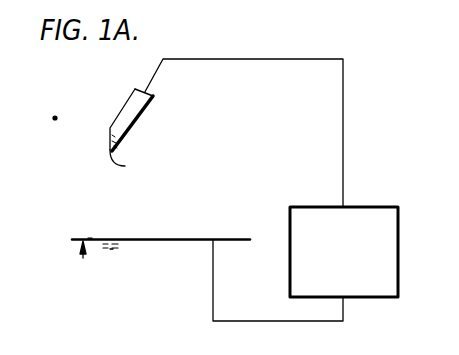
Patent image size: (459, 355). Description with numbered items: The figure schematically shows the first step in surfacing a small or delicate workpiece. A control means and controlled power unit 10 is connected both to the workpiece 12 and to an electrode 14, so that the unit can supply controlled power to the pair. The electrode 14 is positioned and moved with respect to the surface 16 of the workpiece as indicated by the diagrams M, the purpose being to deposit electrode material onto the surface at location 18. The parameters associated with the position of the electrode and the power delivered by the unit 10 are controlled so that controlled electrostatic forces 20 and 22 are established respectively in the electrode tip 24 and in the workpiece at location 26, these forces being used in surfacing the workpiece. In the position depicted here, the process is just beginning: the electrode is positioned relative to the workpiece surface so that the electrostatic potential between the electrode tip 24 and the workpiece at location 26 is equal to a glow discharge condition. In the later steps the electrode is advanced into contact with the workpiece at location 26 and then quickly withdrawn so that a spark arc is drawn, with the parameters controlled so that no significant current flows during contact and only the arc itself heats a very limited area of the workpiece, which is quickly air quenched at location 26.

The diagrams M is at (55, 118).
The control means and controlled power unit 10 is at (378, 205).
The workpiece 12 is at (83, 258).
The electrode 14 is at (147, 112).
The surface 16 is at (92, 238).
The location 18 is at (173, 242).
The controlled electrostatic force 20 is at (117, 133).
The controlled electrostatic force 22 is at (111, 250).
The electrode tip 24 is at (125, 166).
The location 26 is at (112, 238).